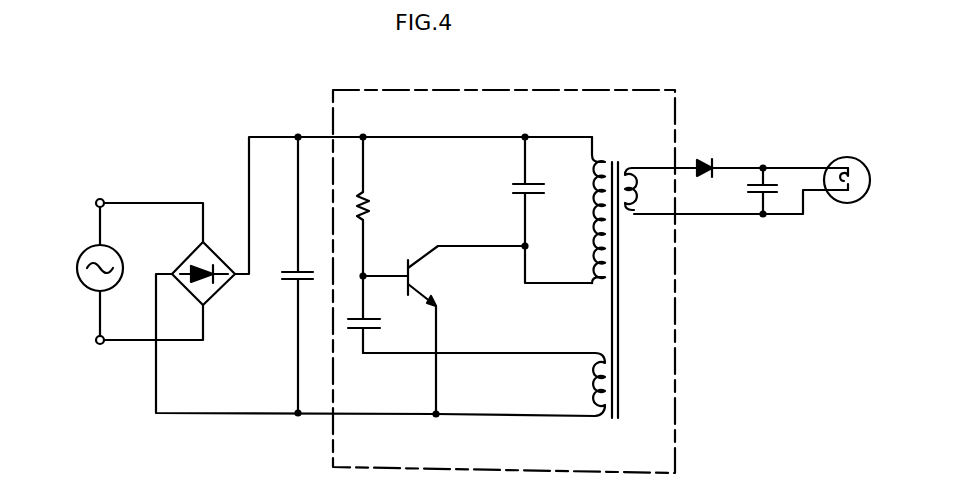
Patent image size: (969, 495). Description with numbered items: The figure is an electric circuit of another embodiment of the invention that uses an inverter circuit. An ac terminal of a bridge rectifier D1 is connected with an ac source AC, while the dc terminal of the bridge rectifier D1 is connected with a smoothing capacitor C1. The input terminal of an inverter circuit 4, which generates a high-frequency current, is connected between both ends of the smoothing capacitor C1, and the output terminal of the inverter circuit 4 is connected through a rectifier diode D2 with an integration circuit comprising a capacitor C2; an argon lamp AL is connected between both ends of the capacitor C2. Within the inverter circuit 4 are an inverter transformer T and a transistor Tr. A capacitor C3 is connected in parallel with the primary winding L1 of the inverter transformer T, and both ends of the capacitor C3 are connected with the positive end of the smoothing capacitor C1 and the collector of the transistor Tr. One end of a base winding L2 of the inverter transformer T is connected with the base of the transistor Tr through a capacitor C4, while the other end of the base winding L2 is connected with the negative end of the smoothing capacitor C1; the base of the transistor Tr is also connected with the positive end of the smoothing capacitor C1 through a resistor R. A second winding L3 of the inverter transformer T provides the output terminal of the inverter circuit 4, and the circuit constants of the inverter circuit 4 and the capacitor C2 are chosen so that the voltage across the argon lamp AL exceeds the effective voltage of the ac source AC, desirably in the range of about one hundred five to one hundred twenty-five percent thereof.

The ac source AC is at (85, 271).
The bridge rectifier D1 is at (205, 285).
The smoothing capacitor C1 is at (289, 275).
The resistor R is at (372, 206).
The transistor Tr is at (466, 330).
The capacitor C4 is at (380, 314).
The capacitor C3 is at (515, 191).
The primary winding L1 is at (584, 210).
The inverter transformer T is at (618, 273).
The second winding L3 is at (646, 189).
The base winding L2 is at (581, 384).
The rectifier diode D2 is at (705, 154).
The capacitor C2 is at (747, 191).
The argon lamp AL is at (847, 197).
The inverter circuit 4 is at (675, 348).